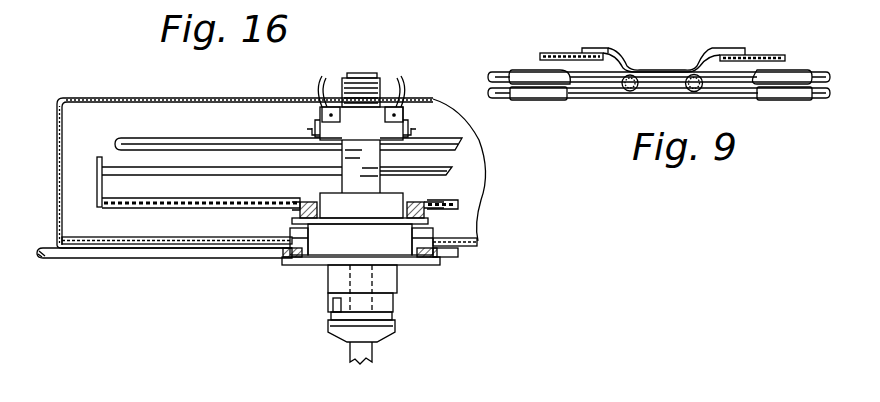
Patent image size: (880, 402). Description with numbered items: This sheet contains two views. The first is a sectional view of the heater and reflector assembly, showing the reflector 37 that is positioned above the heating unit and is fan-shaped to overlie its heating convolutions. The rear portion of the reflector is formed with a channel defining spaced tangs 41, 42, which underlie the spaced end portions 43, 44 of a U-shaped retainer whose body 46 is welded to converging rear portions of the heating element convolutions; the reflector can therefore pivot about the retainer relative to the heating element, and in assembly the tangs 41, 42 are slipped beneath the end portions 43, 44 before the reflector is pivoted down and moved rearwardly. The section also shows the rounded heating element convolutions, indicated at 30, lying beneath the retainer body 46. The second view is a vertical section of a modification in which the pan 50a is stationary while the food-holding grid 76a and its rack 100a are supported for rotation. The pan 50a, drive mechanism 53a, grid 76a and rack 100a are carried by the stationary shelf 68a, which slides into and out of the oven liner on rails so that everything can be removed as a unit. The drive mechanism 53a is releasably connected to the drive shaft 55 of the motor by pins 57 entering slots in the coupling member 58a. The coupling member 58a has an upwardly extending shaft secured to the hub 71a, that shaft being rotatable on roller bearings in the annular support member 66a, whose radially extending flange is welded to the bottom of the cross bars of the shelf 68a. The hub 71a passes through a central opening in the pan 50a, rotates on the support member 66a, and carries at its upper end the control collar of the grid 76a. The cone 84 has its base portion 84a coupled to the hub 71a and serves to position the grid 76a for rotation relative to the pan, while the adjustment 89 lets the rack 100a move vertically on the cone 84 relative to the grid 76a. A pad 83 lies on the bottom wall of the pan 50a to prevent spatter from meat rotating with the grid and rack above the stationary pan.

In FIG. 16, the pan 50a is at (56, 113).
In FIG. 16, the rack 100a is at (207, 134).
In FIG. 16, the grid 76a is at (112, 167).
In FIG. 16, the adjustment 89 is at (303, 120).
In FIG. 16, the cone 84 is at (361, 76).
In FIG. 16, the base portion 84a is at (397, 197).
In FIG. 16, the hub 71a is at (410, 240).
In FIG. 16, the pad 83 is at (118, 238).
In FIG. 16, the shelf 68a is at (277, 256).
In FIG. 16, the annular support member 66a is at (337, 279).
In FIG. 16, the coupling member 58a is at (390, 302).
In FIG. 16, the pins 57 is at (388, 314).
In FIG. 16, the drive mechanism 53a is at (318, 304).
In FIG. 16, the drive shaft 55 is at (363, 351).
In FIG. 9, the reflector 37 is at (540, 57).
In FIG. 9, the tang 41 is at (560, 53).
In FIG. 9, the end portion 43 is at (585, 48).
In FIG. 9, the retainer body 46 is at (650, 68).
In FIG. 9, the end portion 44 is at (720, 48).
In FIG. 9, the tang 42 is at (768, 55).
In FIG. 9, the ball 30 is at (620, 90).